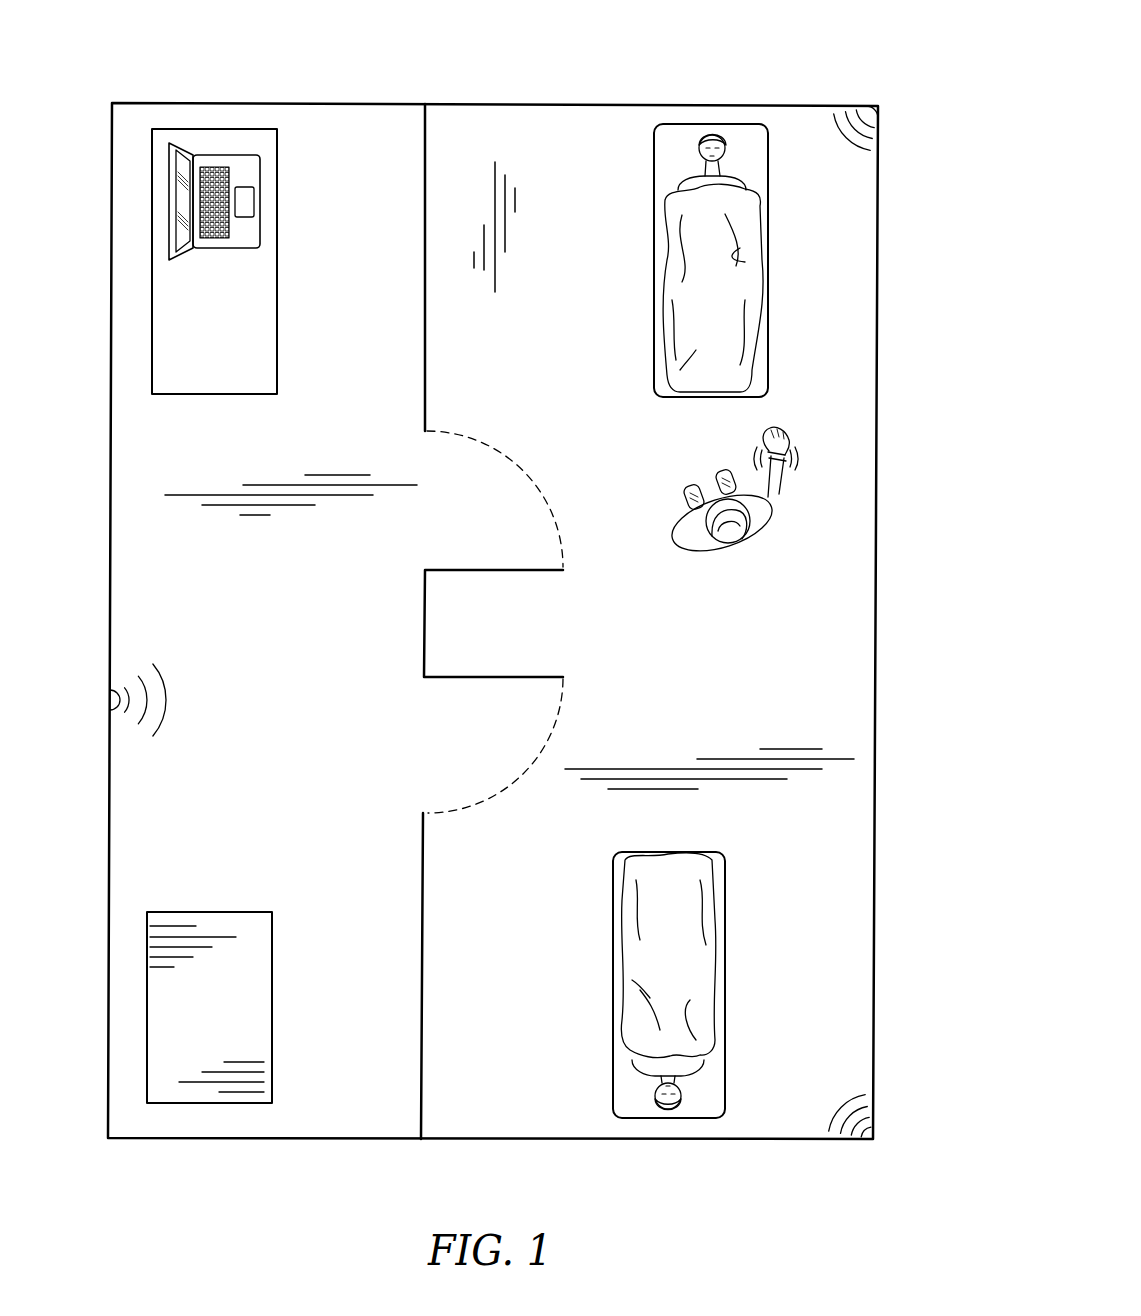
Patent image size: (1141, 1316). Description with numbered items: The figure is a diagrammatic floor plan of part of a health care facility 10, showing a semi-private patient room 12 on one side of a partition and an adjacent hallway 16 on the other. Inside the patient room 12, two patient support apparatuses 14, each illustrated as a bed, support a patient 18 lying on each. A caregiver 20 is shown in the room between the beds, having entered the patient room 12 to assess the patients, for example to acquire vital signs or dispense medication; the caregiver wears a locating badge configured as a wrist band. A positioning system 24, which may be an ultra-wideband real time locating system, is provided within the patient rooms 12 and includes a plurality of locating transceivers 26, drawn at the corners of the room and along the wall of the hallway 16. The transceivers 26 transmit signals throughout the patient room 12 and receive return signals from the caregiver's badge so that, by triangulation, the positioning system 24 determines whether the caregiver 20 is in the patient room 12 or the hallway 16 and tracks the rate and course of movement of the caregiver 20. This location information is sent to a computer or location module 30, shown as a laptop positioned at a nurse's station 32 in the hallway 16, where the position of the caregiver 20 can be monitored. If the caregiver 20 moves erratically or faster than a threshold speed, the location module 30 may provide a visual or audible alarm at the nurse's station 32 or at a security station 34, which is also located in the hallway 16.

The health care facility 10 is at (750, 70).
The patient room 12 is at (596, 116).
The patient support apparatus 14 is at (757, 353).
The hallway 16 is at (122, 523).
The patient 18 is at (685, 182).
The caregiver 20 is at (687, 535).
The positioning system 24 is at (882, 90).
The locating transceiver 26 is at (880, 107).
The location module 30 is at (259, 187).
The nurse's station 32 is at (257, 345).
The security station 34 is at (264, 1004).